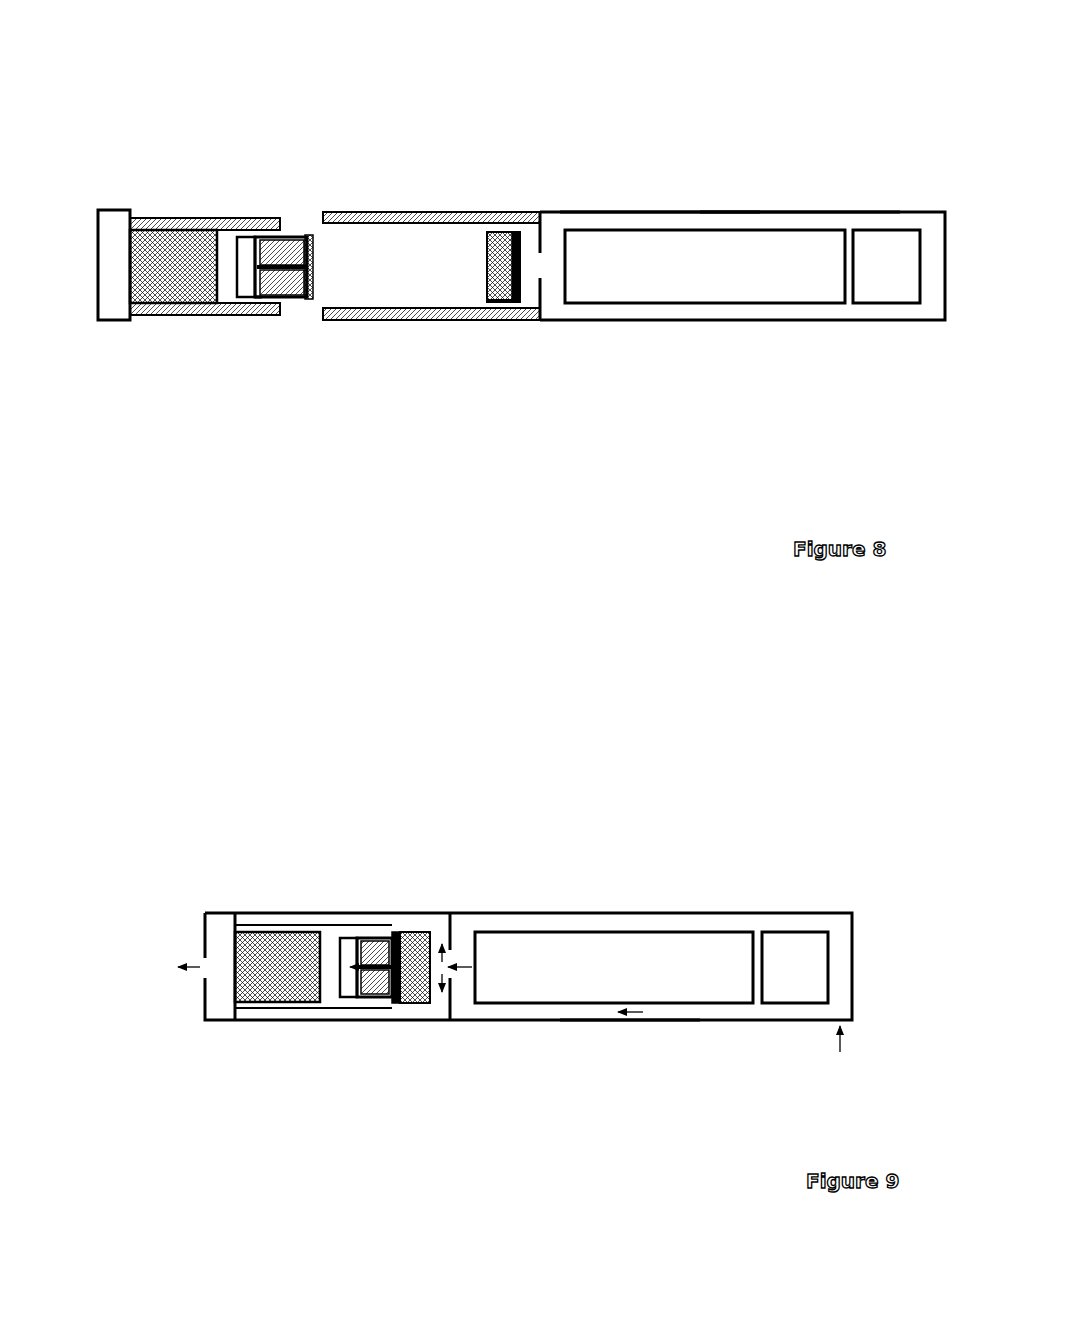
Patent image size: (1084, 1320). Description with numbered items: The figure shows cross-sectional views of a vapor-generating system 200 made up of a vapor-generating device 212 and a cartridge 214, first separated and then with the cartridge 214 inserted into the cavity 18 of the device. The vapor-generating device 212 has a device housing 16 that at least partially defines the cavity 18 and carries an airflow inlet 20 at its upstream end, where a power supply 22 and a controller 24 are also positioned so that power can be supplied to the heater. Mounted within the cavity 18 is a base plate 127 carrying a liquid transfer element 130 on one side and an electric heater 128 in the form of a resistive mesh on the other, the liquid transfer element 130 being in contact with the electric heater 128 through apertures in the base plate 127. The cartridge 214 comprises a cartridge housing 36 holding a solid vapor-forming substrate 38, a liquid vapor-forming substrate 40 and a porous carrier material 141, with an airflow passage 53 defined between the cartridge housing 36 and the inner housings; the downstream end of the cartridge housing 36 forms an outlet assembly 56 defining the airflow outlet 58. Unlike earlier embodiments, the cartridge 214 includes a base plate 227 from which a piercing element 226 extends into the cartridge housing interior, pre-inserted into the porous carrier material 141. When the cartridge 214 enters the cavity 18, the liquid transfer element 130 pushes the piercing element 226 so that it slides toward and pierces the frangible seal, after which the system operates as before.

In FIG. 8, the device housing 16 is at (547, 212).
In FIG. 8, the cavity 18 is at (372, 250).
In FIG. 8, the airflow inlet 20 is at (935, 321).
In FIG. 8, the power supply 22 is at (705, 266).
In FIG. 8, the controller 24 is at (886, 266).
In FIG. 8, the cartridge housing 36 is at (212, 218).
In FIG. 8, the solid vapor-forming substrate 38 is at (165, 285).
In FIG. 8, the liquid vapor-forming substrate 40 is at (246, 252).
In FIG. 8, the airflow passage 53 is at (262, 234).
In FIG. 8, the outlet assembly 56 is at (100, 321).
In FIG. 8, the airflow outlet 58 is at (96, 262).
In FIG. 8, the base plate 127 is at (512, 302).
In FIG. 8, the electric heater 128 is at (517, 268).
In FIG. 8, the liquid transfer element 130 is at (493, 245).
In FIG. 8, the porous carrier material 141 is at (267, 290).
In FIG. 8, the vapor-generating system 200 is at (786, 176).
In FIG. 9, the vapor-generating system 200 is at (818, 882).
In FIG. 8, the vapor-generating device 212 is at (646, 207).
In FIG. 9, the vapor-generating device 212 is at (644, 1027).
In FIG. 8, the cartridge 214 is at (162, 216).
In FIG. 9, the cartridge 214 is at (281, 1015).
In FIG. 8, the piercing element 226 is at (290, 268).
In FIG. 8, the base plate 227 is at (310, 243).